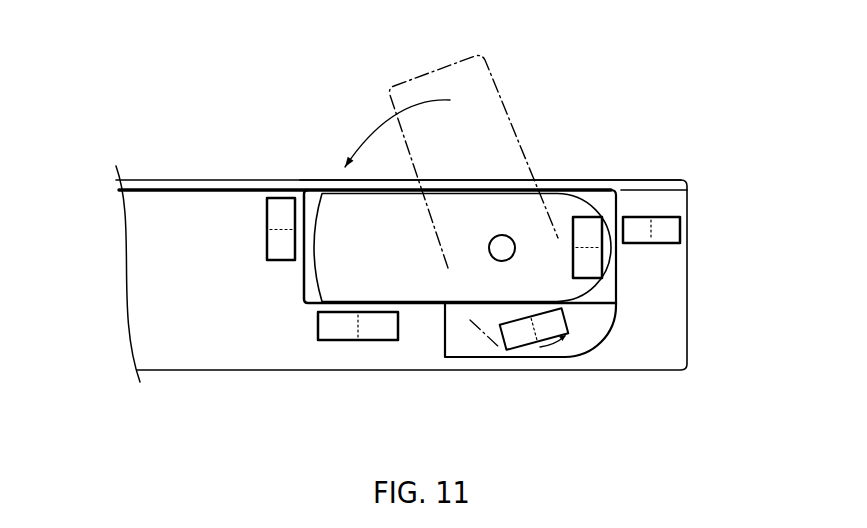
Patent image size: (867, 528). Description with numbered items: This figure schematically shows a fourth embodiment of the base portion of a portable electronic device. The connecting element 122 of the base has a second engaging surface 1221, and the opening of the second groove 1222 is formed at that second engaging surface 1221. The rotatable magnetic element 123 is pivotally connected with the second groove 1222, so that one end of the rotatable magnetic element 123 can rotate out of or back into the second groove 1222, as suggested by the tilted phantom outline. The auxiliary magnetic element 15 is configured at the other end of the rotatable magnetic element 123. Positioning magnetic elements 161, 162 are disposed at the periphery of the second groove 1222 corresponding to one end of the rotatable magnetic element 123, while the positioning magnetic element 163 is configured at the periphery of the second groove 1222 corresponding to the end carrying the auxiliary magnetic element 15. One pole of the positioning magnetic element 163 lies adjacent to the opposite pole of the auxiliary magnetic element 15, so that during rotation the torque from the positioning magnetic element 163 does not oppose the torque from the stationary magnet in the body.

The auxiliary magnetic element 15 is at (603, 216).
The connecting element 122 is at (193, 352).
The rotatable magnetic element 123 is at (325, 263).
The second engaging surface 1221 is at (654, 180).
The second groove 1222 is at (602, 203).
The positioning magnetic element 161 is at (282, 196).
The positioning magnetic element 162 is at (322, 343).
The positioning magnetic element 163 is at (680, 243).